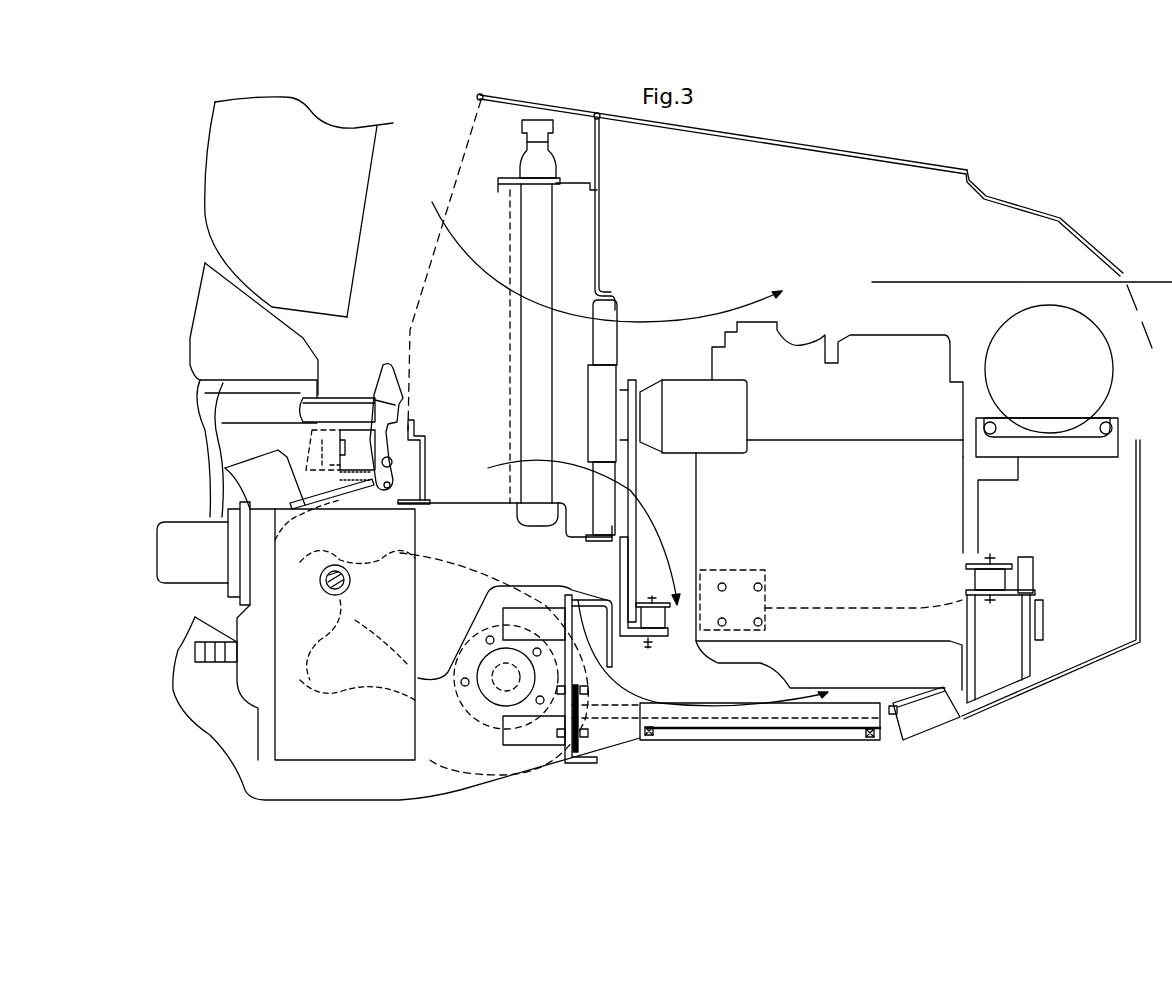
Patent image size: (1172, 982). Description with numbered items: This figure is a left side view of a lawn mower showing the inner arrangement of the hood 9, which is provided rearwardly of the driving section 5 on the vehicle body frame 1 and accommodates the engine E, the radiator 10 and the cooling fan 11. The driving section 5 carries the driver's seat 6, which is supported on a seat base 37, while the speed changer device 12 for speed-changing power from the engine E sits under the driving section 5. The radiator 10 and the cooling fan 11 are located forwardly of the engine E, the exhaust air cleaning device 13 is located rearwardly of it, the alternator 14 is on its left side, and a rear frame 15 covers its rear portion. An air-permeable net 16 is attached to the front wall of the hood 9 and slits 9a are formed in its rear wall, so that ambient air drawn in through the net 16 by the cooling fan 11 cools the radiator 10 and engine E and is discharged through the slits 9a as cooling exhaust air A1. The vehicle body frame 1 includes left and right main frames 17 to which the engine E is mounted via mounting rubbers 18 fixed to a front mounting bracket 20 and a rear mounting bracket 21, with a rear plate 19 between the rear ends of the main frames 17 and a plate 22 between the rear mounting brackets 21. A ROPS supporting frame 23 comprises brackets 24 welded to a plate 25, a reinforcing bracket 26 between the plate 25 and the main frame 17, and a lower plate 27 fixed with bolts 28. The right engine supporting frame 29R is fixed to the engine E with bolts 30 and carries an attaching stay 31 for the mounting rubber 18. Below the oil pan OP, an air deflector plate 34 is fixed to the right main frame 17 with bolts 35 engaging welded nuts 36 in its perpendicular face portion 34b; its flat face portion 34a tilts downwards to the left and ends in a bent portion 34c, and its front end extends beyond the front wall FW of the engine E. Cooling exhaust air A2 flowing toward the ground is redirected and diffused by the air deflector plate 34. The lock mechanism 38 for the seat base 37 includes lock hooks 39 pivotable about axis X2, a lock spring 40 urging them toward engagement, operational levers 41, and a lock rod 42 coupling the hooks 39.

The vehicle body frame 1 is at (230, 745).
The driving section 5 is at (165, 168).
The driver's seat 6 is at (216, 217).
The hood 9 is at (945, 170).
The slits 9a is at (1150, 335).
The radiator 10 is at (521, 165).
The cooling fan 11 is at (613, 318).
The speed changer device 12 is at (400, 708).
The exhaust air cleaning device 13 is at (1003, 345).
The alternator 14 is at (743, 410).
The rear frame 15 is at (1110, 655).
The net 16 is at (432, 272).
The main frame 17 is at (540, 588).
The mounting rubber 18 is at (658, 635).
The rear plate 19 is at (932, 732).
The front mounting bracket 20 is at (627, 636).
The rear mounting bracket 21 is at (972, 590).
The plate 22 is at (1043, 620).
The ROPS supporting frame 23 is at (516, 609).
The bracket 24 is at (506, 678).
The plate 25 is at (568, 597).
The reinforcing bracket 26 is at (590, 605).
The lower plate 27 is at (583, 760).
The bolts 28 is at (586, 740).
The right engine supporting frame 29R is at (748, 575).
The bolts 30 is at (722, 583).
The attaching stay 31 is at (662, 600).
The air deflector plate 34 is at (758, 742).
The flat face portion 34a is at (840, 705).
The perpendicular face portion 34b is at (788, 742).
The bent portion 34c is at (727, 730).
The bolts 35 is at (649, 740).
The welded nuts 36 is at (652, 737).
The seat base 37 is at (230, 410).
The lock mechanism 38 is at (372, 350).
The lock hook 39 is at (393, 406).
The lock spring 40 is at (352, 502).
The operational lever 41 is at (388, 380).
The lock rod 42 is at (418, 462).
The cooling exhaust air A1 is at (690, 302).
The cooling exhaust air A2 is at (570, 460).
The engine E is at (848, 335).
The front wall FW is at (655, 485).
The oil pan OP is at (940, 660).
The axis X2 is at (428, 490).